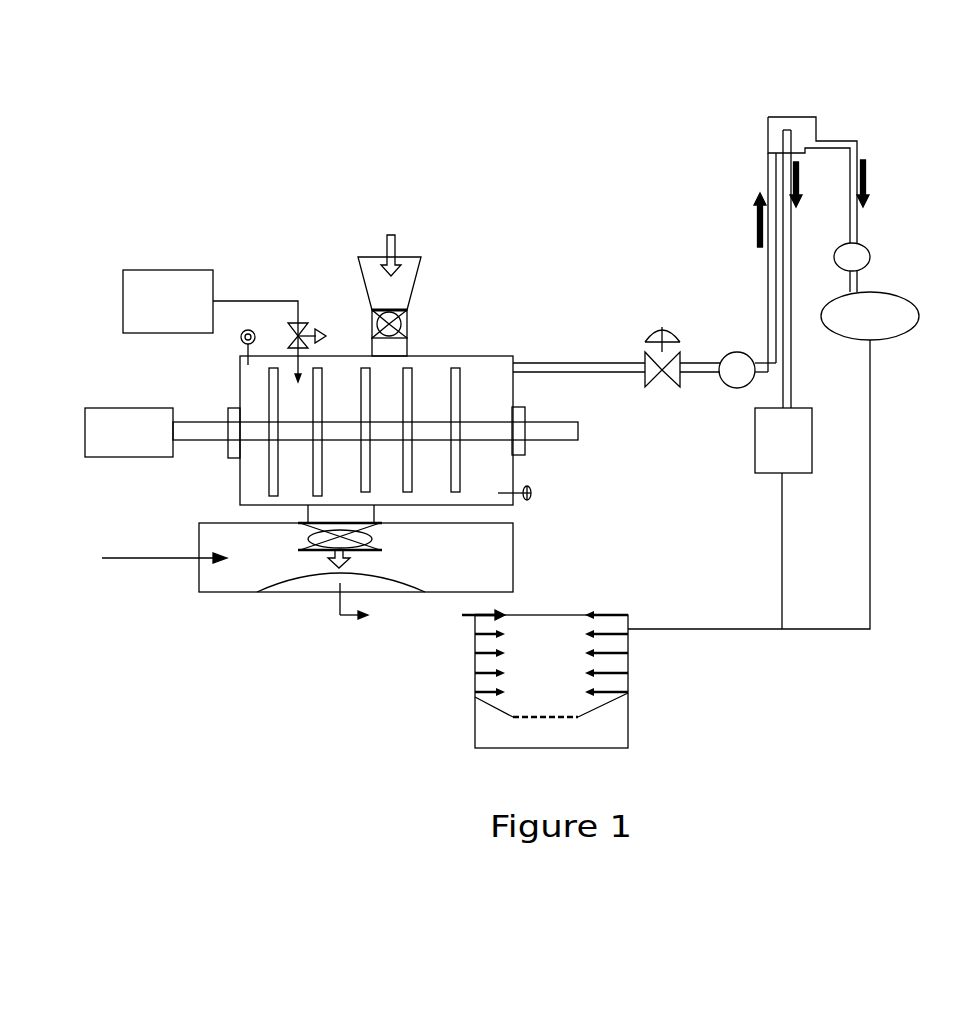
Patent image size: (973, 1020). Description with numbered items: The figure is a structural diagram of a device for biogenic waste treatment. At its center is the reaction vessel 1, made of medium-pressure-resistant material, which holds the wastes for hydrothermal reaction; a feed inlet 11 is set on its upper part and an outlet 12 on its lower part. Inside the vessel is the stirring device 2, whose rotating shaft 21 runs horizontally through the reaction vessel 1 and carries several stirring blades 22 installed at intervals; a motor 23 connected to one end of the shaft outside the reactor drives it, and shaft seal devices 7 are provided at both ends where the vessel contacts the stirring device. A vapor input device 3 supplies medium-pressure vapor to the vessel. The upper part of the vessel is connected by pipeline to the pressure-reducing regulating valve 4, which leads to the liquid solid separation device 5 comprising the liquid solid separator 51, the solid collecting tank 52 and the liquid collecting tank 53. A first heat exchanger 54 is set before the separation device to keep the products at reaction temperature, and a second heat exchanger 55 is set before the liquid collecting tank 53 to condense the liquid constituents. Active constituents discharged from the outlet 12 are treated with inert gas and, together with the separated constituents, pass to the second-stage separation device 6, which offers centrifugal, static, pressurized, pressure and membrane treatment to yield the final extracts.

The reaction vessel 1 is at (477, 368).
The feed inlet 11 is at (428, 291).
The outlet 12 is at (411, 538).
The stirring device 2 is at (178, 398).
The rotating shaft 21 is at (207, 430).
The stirring blades 22 is at (476, 467).
The motor 23 is at (122, 449).
The vapor input device 3 is at (200, 285).
The pressure-reducing regulating valve 4 is at (652, 332).
The liquid solid separation device 5 is at (905, 197).
The liquid solid separator 51 is at (805, 127).
The solid collecting tank 52 is at (763, 442).
The liquid collecting tank 53 is at (853, 327).
The first heat exchanger 54 is at (737, 362).
The second heat exchanger 55 is at (858, 257).
The second-stage separation device 6 is at (634, 714).
The shaft seal devices 7 is at (518, 417).